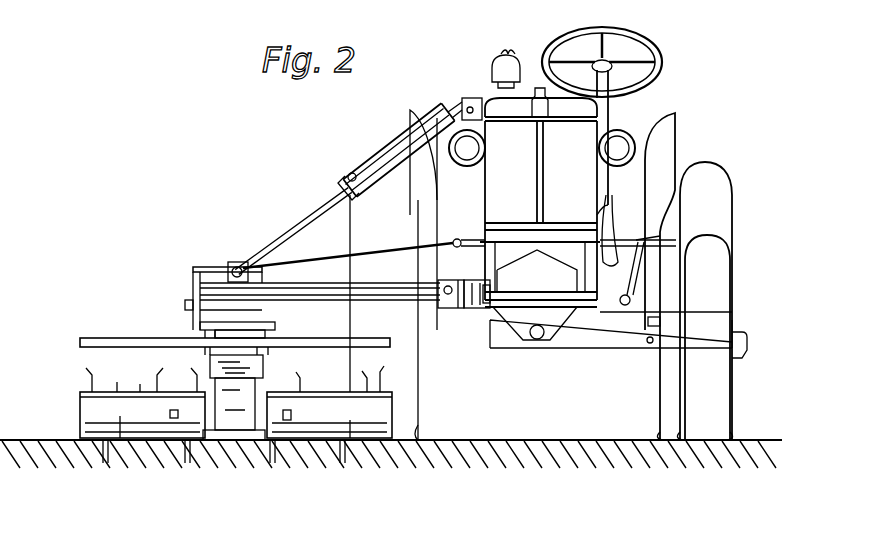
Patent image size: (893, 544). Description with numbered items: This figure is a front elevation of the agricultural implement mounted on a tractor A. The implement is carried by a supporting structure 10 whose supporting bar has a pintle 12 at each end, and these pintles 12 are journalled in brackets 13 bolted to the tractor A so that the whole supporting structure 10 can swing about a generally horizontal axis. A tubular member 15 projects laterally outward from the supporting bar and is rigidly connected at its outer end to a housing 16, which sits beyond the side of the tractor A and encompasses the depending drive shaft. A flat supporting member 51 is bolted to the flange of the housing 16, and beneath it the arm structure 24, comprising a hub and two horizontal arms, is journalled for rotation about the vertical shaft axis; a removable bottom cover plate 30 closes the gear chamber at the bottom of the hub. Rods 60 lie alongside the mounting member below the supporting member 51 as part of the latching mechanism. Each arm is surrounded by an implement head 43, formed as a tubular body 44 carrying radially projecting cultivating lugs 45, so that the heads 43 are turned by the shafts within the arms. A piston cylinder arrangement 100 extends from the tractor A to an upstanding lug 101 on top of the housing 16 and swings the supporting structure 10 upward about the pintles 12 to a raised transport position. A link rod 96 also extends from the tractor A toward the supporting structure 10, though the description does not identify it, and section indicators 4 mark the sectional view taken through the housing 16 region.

The supporting structure 10 is at (374, 282).
The pintles 12 is at (447, 310).
The brackets 13 is at (469, 310).
The tubular member 15 is at (337, 278).
The housing 16 is at (193, 283).
The arm structure 24 is at (270, 364).
The bottom cover plate 30 is at (233, 434).
The implement heads 43 is at (398, 406).
The tubular body 44 is at (92, 408).
The cultivating lugs 45 is at (143, 386).
The flat supporting member 51 is at (268, 325).
The rods 60 is at (370, 338).
The link rod 96 is at (369, 252).
The piston cylinder arrangement 100 is at (374, 153).
The upstanding lug 101 is at (293, 231).
The section line 4- 4 is at (185, 310).
The tractor A is at (508, 354).